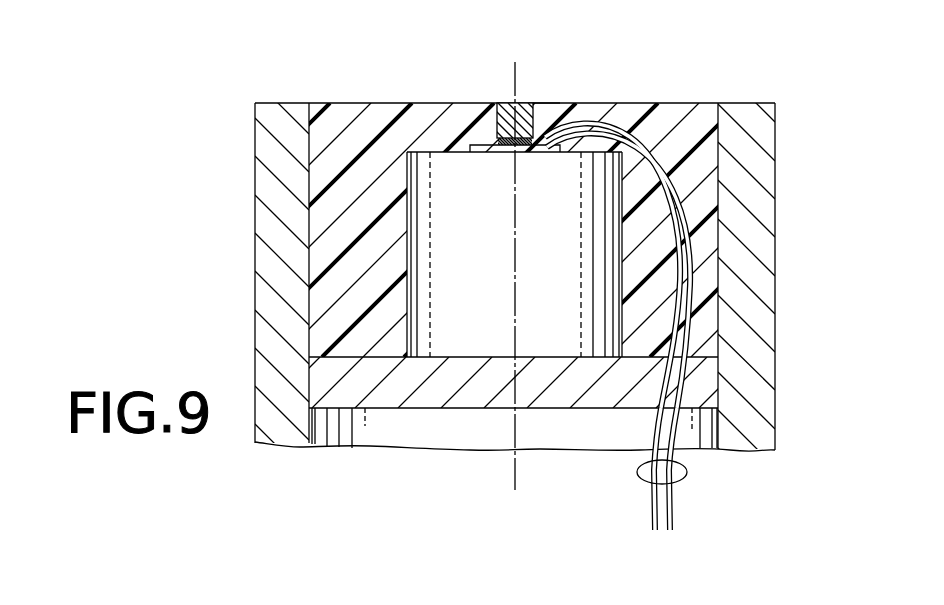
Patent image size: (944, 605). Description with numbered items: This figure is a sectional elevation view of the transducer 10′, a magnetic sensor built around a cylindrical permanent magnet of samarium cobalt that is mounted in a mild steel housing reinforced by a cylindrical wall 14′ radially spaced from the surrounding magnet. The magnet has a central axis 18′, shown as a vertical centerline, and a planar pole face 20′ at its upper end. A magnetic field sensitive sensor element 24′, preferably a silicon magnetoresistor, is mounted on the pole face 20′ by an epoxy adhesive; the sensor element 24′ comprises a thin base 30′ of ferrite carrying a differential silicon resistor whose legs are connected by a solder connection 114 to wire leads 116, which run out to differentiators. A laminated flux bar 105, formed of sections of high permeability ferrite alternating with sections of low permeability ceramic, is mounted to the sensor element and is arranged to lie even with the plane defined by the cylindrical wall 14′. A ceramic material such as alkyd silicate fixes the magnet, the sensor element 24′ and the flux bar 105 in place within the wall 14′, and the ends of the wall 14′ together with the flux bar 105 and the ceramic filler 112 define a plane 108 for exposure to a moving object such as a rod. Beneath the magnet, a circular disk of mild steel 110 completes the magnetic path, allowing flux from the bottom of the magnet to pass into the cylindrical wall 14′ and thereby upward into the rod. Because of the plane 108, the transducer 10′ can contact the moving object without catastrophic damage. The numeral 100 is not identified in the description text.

The transducer 10′ is at (785, 113).
The plane 108 is at (323, 103).
The cylindrical wall 14′ is at (767, 272).
The planar pole face 20′ is at (442, 150).
The ceramic filler 112 is at (683, 108).
The circular disk of mild steel 110 is at (497, 402).
The sensor element 24′ is at (498, 138).
The insert 100 is at (532, 102).
The solder connection 114 is at (552, 143).
The laminated flux bar 105 is at (543, 83).
The thin base 30′ is at (535, 135).
The wire leads 116 is at (687, 476).
The axis 18′ is at (515, 308).